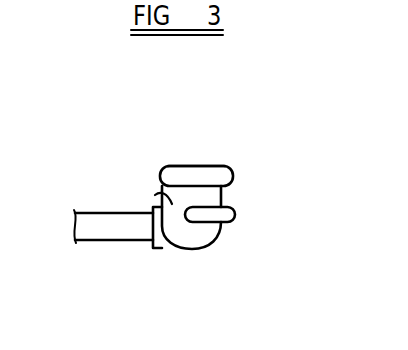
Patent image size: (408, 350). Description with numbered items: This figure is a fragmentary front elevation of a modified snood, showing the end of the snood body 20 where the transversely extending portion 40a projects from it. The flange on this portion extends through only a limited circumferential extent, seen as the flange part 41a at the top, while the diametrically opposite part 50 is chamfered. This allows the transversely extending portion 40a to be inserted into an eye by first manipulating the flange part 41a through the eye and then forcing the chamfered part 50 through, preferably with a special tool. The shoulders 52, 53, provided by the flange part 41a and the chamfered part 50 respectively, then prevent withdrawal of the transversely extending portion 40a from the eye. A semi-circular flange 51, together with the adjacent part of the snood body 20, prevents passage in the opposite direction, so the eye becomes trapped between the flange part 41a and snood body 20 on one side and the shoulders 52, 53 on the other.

The snood body 20 is at (133, 240).
The transversely extending portion 40a is at (156, 194).
The flange part 41a is at (217, 167).
The chamfered part 50 is at (159, 181).
The semi-circular flange 51 is at (232, 222).
The shoulder 52 is at (226, 187).
The shoulder 53 is at (156, 184).